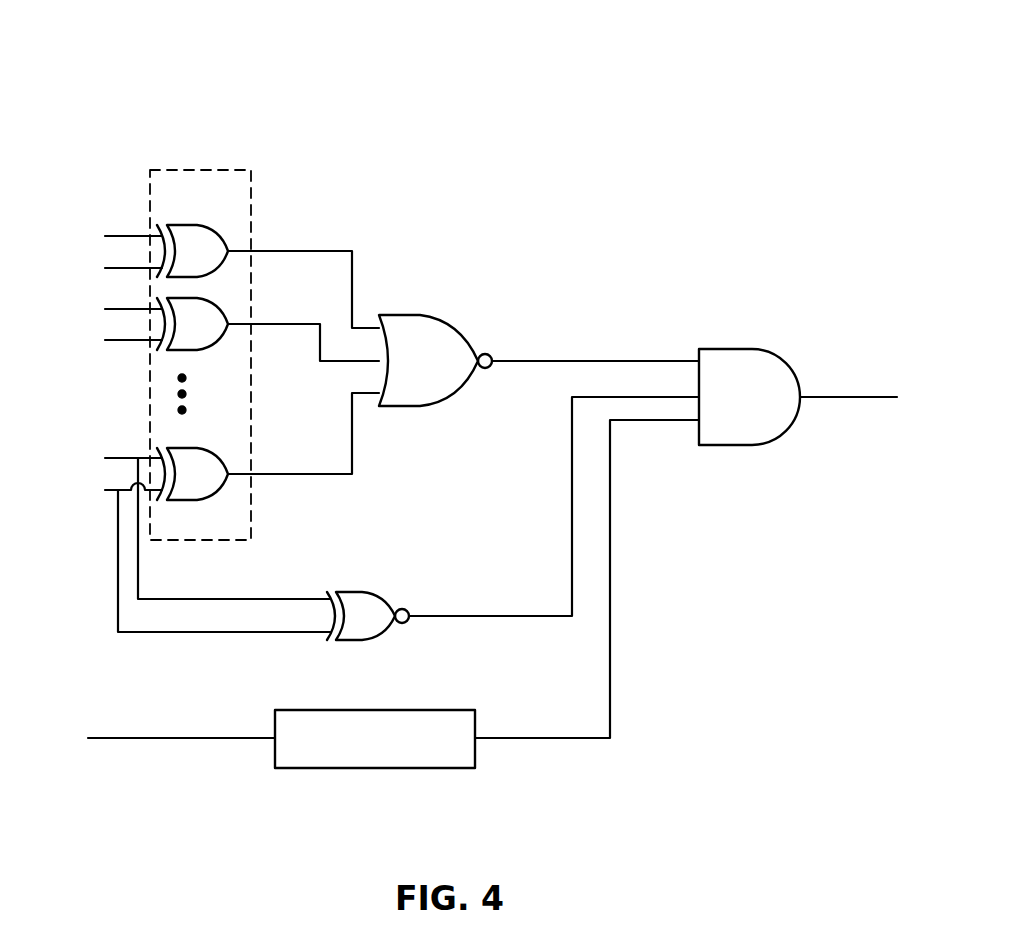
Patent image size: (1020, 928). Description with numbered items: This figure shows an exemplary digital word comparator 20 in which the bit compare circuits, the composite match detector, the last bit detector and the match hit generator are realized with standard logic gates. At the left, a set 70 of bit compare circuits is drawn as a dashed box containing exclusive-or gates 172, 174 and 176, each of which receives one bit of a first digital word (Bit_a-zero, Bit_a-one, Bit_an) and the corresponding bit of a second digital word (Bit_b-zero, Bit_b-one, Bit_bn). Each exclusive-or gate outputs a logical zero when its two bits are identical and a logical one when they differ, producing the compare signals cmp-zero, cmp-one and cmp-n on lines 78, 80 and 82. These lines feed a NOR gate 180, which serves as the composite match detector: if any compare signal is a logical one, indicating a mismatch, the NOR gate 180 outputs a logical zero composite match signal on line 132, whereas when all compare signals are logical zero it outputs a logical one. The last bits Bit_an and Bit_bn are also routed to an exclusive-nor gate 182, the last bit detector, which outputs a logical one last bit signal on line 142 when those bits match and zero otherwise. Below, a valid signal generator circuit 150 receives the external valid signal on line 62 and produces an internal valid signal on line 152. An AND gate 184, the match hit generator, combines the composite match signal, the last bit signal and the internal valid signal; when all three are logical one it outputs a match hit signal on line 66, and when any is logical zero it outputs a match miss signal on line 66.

The digital word comparator 20 is at (237, 88).
The set of bit compare circuits 70 is at (220, 170).
The exclusive-or gate 172 is at (203, 225).
The exclusive-or gate 174 is at (203, 350).
The exclusive-or gate 176 is at (210, 448).
The line 78 is at (274, 251).
The line 80 is at (278, 324).
The line 82 is at (275, 474).
The NOR gate 180 is at (420, 315).
The line 132 is at (581, 361).
The AND gate 184 is at (752, 349).
The line 66 is at (870, 397).
The exclusive-nor gate 182 is at (375, 592).
The line 142 is at (508, 616).
The valid signal generator circuit 150 is at (370, 710).
The line 62 is at (199, 738).
The line 152 is at (495, 738).